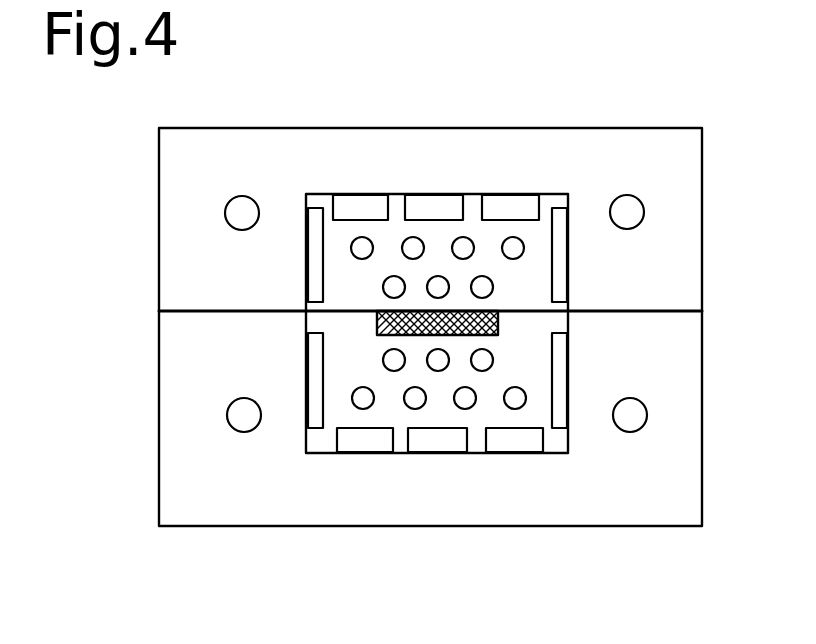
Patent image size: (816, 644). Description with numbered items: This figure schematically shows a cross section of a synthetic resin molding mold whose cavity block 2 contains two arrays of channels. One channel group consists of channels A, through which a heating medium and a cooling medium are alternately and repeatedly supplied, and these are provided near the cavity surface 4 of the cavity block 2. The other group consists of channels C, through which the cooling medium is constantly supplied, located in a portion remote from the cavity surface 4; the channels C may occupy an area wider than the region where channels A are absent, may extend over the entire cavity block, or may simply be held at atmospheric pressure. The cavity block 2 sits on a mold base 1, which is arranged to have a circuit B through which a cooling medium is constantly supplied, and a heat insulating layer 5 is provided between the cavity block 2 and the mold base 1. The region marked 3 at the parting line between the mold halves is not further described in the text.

The mold base 1 is at (685, 128).
The cavity block 2 is at (538, 257).
The heat conducting member 3 is at (498, 325).
The cavity surface 4 is at (482, 312).
The heat insulating layer 5 is at (313, 413).
The channel A is at (438, 372).
The circuit B is at (647, 420).
The channel C is at (515, 407).